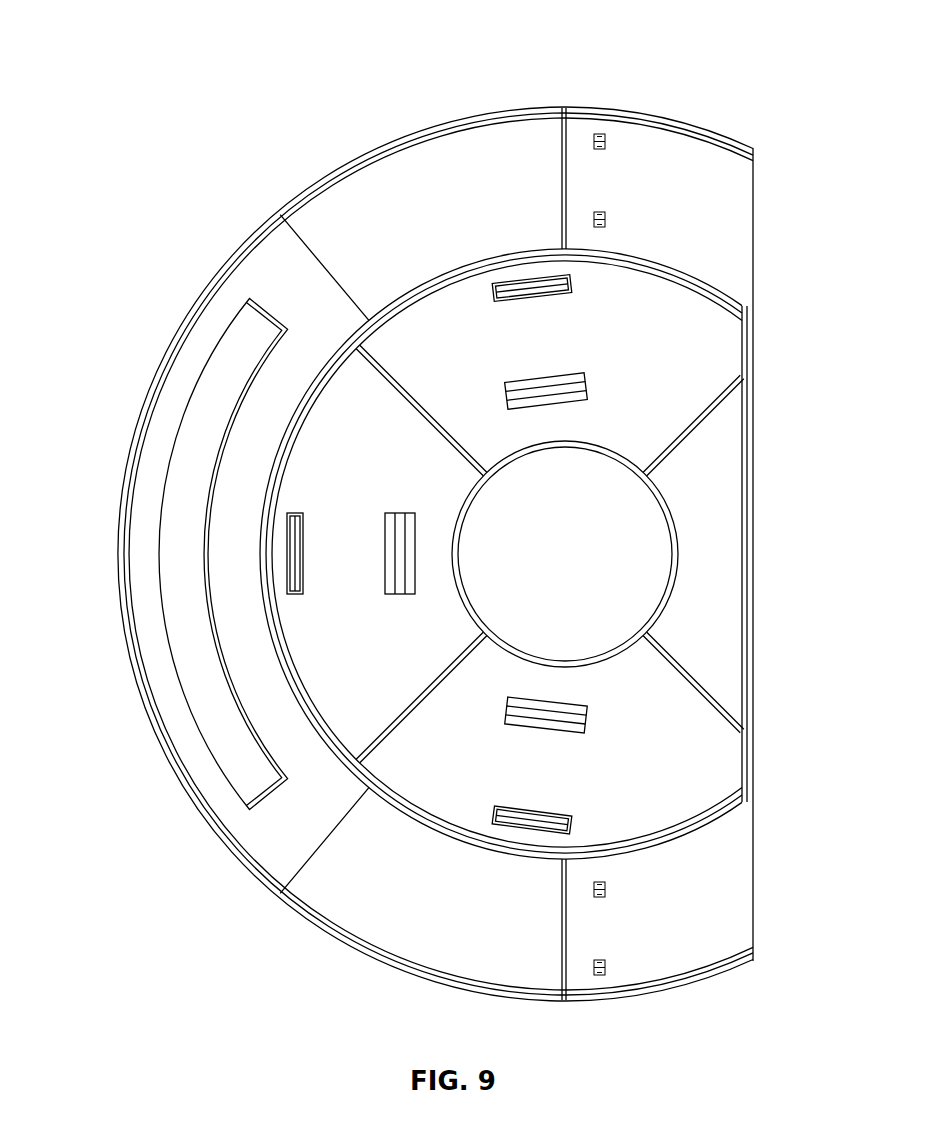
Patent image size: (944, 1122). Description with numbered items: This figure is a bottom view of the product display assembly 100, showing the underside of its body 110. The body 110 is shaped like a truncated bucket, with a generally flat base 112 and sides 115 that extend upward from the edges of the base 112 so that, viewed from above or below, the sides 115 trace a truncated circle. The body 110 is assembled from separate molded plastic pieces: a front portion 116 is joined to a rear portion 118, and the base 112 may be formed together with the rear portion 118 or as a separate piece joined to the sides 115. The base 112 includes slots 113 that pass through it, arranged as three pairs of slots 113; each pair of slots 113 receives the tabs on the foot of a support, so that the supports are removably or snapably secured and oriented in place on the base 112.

The product display assembly 100 is at (437, 500).
The body 110 is at (665, 146).
The base 112 is at (435, 333).
The slots 113 is at (566, 306).
The sides 115 is at (427, 158).
The front portion 116 is at (135, 553).
The rear portion 118 is at (757, 410).